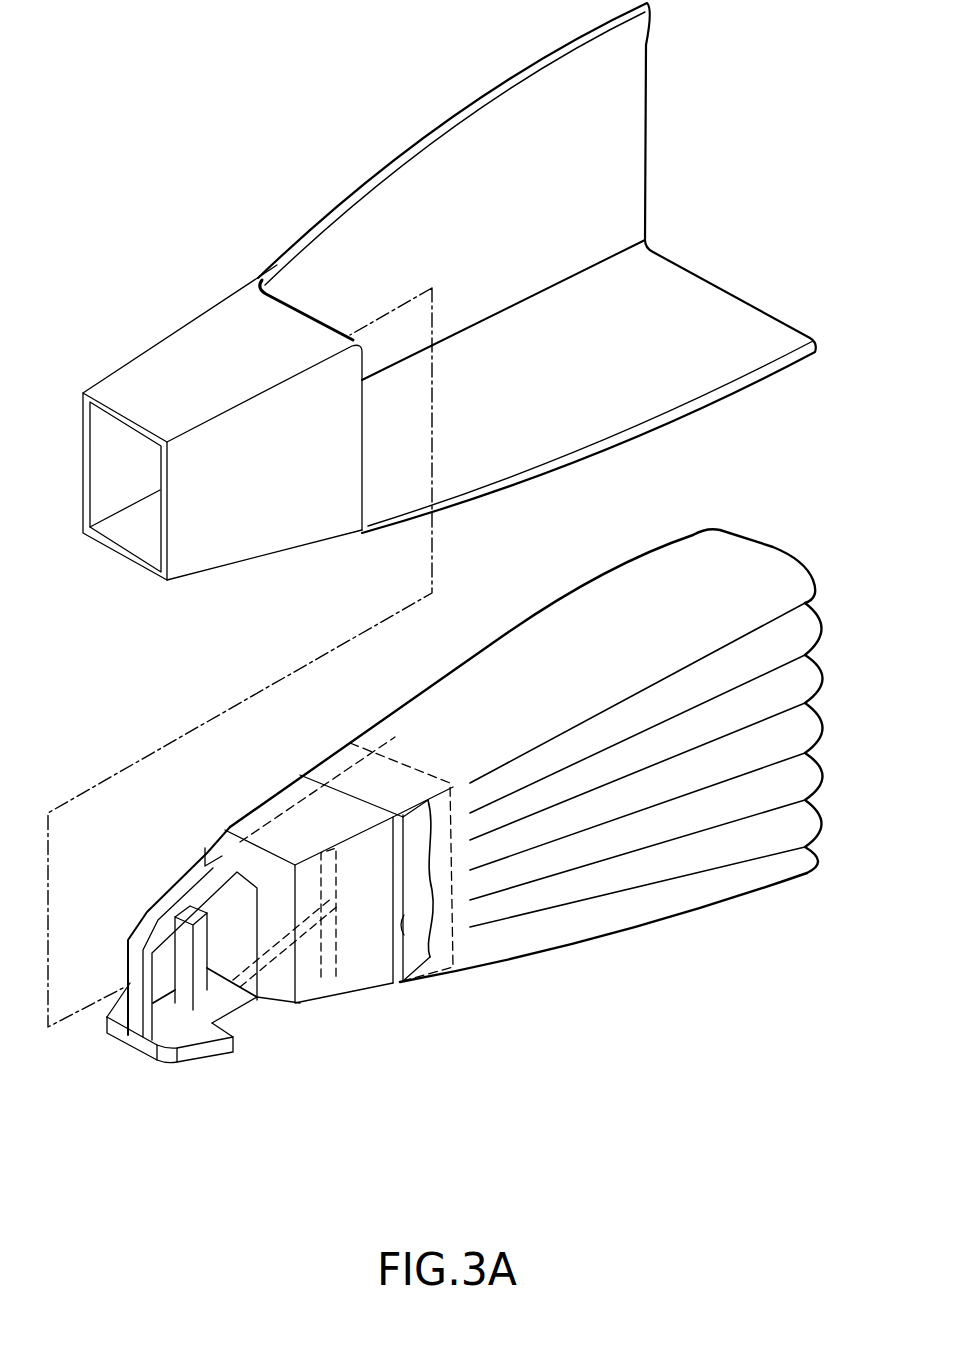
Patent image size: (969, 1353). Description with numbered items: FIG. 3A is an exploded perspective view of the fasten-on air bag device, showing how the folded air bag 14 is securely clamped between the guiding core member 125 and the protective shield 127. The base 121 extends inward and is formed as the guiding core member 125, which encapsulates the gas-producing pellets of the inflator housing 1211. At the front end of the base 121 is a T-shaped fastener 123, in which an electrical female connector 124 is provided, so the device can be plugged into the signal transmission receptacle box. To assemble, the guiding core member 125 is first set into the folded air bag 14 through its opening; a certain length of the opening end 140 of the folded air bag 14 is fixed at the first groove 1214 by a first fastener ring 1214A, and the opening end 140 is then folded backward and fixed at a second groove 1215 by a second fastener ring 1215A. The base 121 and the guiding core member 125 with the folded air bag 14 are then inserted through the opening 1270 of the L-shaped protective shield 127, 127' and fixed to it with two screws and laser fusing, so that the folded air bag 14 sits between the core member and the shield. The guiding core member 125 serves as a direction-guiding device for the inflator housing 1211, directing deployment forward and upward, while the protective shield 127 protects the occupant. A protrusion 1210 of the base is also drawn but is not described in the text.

The folded air bag 14 is at (758, 558).
The base 121 is at (300, 810).
The T-shaped fastener 123 is at (145, 923).
The electrical female connector 124 is at (137, 1040).
The guiding core member 125 is at (408, 760).
The protective shield 127 is at (351, 373).
The protective shield portion 127' is at (537, 268).
The opening of the protective shield 1270 is at (132, 535).
The protrusion of housing 1210 is at (260, 1000).
The inflator housing 1211 is at (367, 935).
The first groove 1214 is at (327, 960).
The first fastener ring 1214A is at (340, 992).
The second groove 1215 is at (427, 953).
The second fastener ring 1215A is at (403, 982).
The opening end of the folded air bag 140 is at (427, 913).